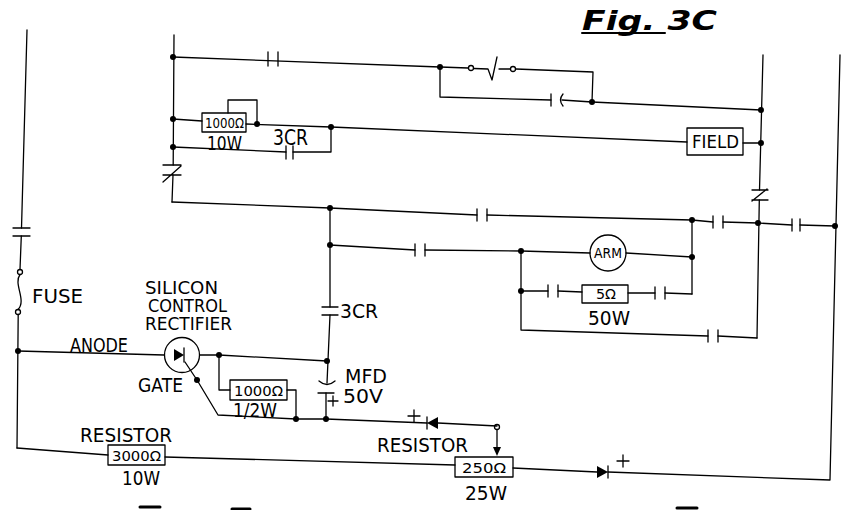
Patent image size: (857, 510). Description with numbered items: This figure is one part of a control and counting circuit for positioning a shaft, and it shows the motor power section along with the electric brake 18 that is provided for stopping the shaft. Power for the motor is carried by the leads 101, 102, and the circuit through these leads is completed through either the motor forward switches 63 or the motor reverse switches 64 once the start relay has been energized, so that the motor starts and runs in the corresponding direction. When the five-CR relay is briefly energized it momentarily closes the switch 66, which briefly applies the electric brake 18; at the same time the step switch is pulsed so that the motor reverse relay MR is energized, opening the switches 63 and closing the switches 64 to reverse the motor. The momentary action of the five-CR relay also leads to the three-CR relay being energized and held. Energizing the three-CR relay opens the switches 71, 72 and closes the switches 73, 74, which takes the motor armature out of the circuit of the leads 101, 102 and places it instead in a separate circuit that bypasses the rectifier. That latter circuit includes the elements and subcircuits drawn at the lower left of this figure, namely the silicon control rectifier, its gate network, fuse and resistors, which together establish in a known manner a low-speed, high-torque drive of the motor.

The electric brake 18 is at (516, 72).
The motor forward switches 63 is at (414, 254).
The motor reverse switches 64 is at (488, 214).
The switch 66 is at (279, 63).
The switch 71 is at (163, 183).
The switch 72 is at (764, 191).
The switch 73 is at (23, 232).
The switch 74 is at (790, 232).
The lead 101 is at (171, 89).
The lead 102 is at (772, 127).